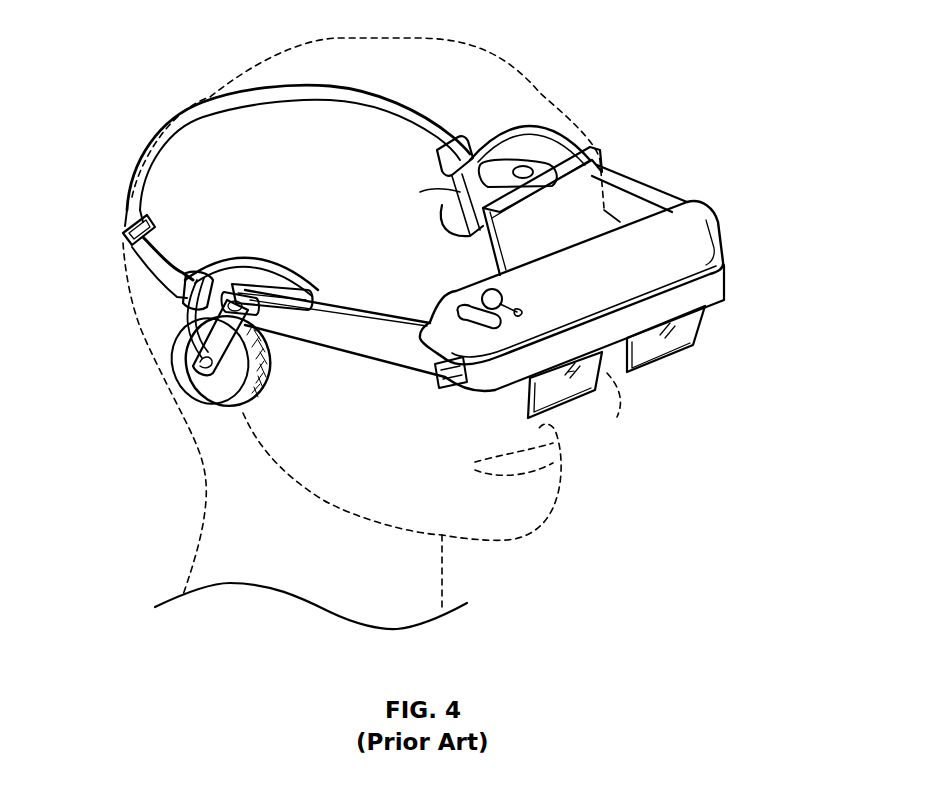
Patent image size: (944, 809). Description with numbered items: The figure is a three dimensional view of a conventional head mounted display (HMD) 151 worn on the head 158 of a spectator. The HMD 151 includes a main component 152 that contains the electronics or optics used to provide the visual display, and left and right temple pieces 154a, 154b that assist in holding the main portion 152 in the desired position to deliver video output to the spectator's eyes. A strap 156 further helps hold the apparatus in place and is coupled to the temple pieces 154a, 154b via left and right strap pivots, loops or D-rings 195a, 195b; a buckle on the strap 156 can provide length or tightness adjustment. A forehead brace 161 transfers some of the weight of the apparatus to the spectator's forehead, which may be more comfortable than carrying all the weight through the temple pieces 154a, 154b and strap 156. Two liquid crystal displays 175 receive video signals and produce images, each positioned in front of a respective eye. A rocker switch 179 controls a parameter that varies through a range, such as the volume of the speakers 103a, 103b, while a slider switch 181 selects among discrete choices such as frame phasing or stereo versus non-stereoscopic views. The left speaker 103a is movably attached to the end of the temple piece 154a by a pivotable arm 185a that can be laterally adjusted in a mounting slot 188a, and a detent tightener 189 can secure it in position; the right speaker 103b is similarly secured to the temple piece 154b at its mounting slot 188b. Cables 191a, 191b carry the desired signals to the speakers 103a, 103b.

The head mounted display 151 is at (660, 113).
The main component 152 is at (705, 193).
The left temple piece 154a is at (372, 320).
The right temple piece 154b is at (633, 194).
The strap 156 is at (374, 104).
The head 158 is at (254, 67).
The forehead brace 161 is at (593, 168).
The liquid crystal displays 175 is at (703, 318).
The rocker switch 179 is at (472, 310).
The slider switch 181 is at (445, 377).
The pivotable arm 185a is at (206, 350).
The mounting slot 188a is at (304, 289).
The mounting slot 188b is at (533, 167).
The detent tightener 189 is at (258, 314).
The cable 191a is at (270, 260).
The cable 191b is at (553, 133).
The left strap pivot 195a is at (198, 272).
The right strap pivot 195b is at (450, 172).
The left speaker 103a is at (190, 340).
The right speaker 103b is at (450, 214).